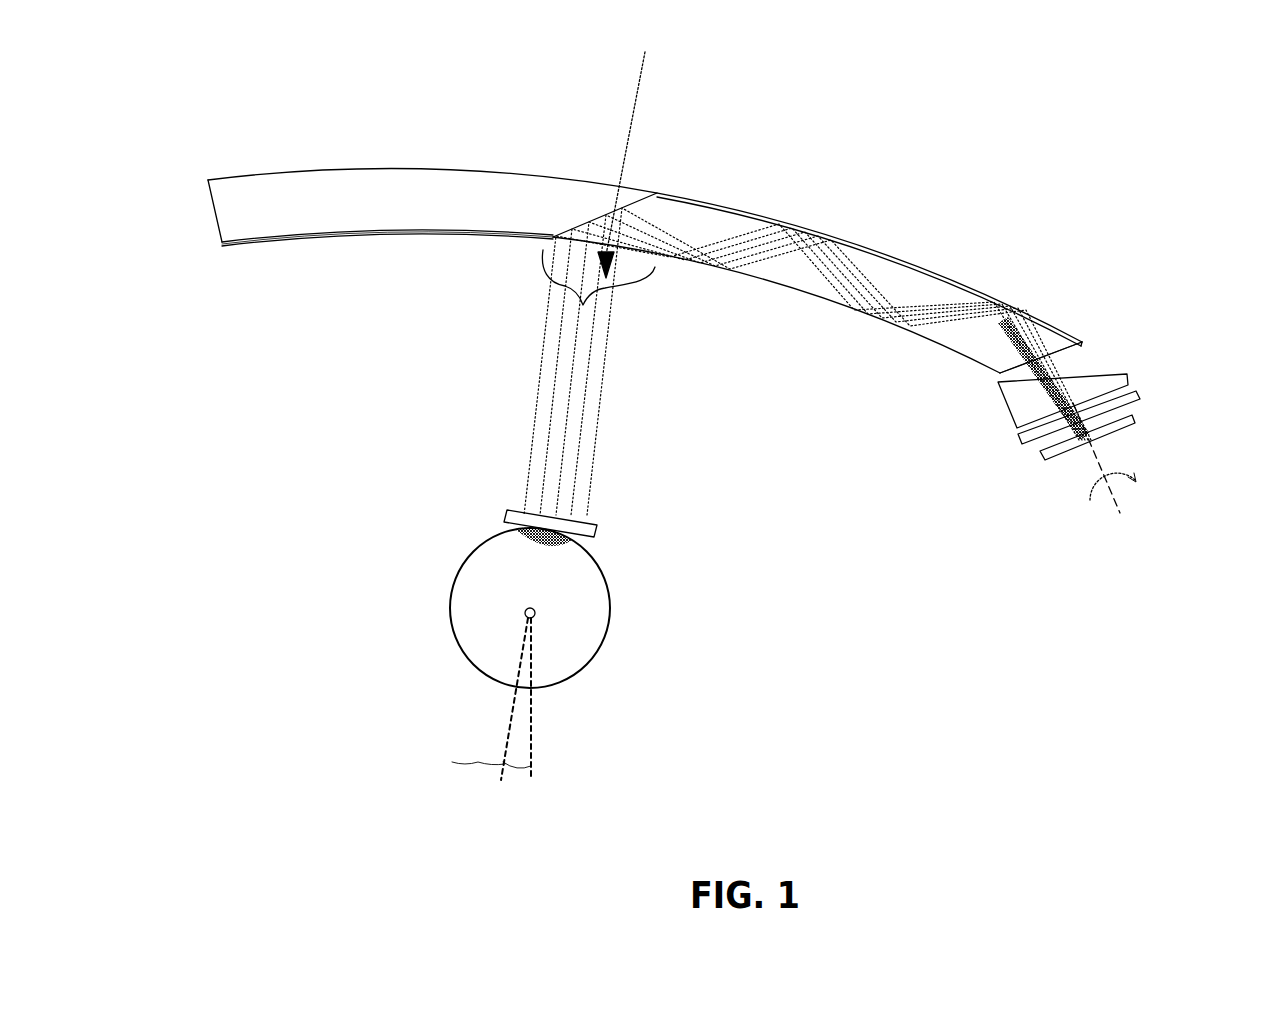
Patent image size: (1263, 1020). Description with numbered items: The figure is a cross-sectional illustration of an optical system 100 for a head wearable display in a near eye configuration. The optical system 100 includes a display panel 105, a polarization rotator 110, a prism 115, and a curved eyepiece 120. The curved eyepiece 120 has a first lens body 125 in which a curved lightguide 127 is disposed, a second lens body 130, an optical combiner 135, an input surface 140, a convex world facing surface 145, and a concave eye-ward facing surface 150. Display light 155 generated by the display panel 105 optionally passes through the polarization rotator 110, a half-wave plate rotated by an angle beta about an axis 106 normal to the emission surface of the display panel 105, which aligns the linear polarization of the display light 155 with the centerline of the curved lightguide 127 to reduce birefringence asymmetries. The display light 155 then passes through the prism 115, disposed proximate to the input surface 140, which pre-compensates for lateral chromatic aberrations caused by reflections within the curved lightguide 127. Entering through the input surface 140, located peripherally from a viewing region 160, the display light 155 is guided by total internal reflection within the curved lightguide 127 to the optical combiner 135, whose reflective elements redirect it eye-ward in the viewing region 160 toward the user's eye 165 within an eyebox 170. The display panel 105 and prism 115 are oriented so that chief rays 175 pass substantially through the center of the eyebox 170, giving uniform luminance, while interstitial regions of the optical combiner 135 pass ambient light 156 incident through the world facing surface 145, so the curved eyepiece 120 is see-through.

The optical system 100 is at (1131, 92).
The display panel 105 is at (1047, 460).
The axis 106 is at (1120, 512).
The polarization rotator 110 is at (1142, 397).
The prism 115 is at (1050, 412).
The curved eyepiece 120 is at (212, 93).
The first lens body 125 is at (792, 282).
The curved lightguide 127 is at (997, 349).
The second lens body 130 is at (292, 182).
The optical combiner 135 is at (603, 213).
The input surface 140 is at (1063, 355).
The world facing surface 145 is at (775, 195).
The eye-ward facing surface 150 is at (450, 242).
The display light 155 is at (637, 373).
The ambient light 156 is at (637, 88).
The viewing region 160 is at (583, 307).
The user's eye 165 is at (547, 594).
The eyebox 170 is at (503, 510).
The chief ray 175 is at (937, 310).